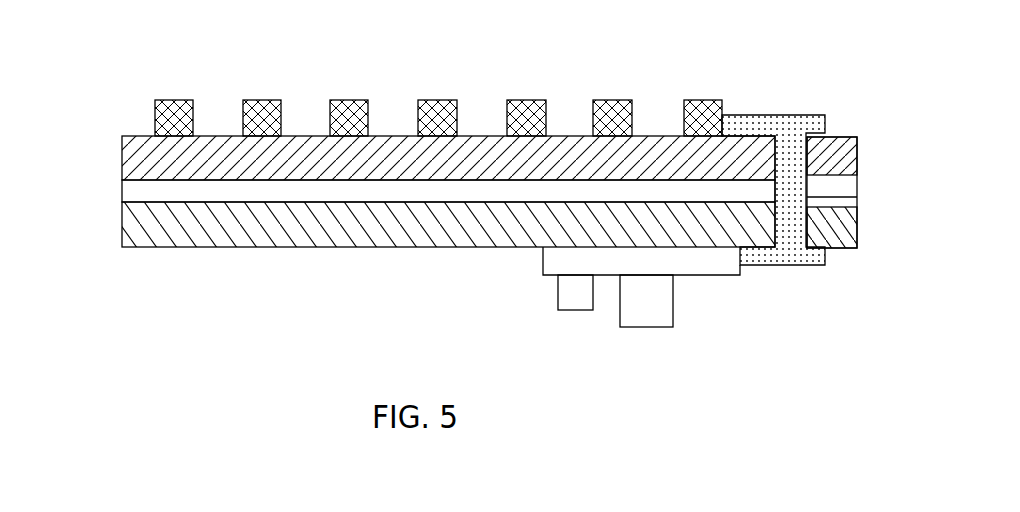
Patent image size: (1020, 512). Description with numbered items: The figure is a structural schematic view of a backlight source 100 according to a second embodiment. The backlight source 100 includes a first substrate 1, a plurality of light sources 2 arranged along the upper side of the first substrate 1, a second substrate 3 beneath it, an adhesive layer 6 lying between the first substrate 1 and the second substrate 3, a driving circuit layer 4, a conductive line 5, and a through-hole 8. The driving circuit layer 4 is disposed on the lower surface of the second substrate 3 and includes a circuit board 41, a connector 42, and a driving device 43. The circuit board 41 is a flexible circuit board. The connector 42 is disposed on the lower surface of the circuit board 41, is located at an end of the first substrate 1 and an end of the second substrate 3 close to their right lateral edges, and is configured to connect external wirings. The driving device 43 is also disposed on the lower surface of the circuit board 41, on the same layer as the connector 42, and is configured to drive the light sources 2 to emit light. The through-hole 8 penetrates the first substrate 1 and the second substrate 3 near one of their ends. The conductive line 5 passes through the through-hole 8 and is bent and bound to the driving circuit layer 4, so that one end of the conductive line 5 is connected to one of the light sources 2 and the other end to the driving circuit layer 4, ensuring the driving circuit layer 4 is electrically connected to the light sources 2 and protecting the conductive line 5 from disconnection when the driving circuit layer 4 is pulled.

The display device 100 is at (146, 39).
The first substrate 1 is at (122, 158).
The light sources 2 is at (348, 101).
The second substrate 3 is at (122, 230).
The driving circuit layer 4 is at (455, 260).
The circuit board 41 is at (585, 264).
The connector 42 is at (648, 300).
The driving device 43 is at (575, 292).
The conductive line 5 is at (815, 127).
The adhesive layer 6 is at (122, 188).
The through-hole 8 is at (856, 197).